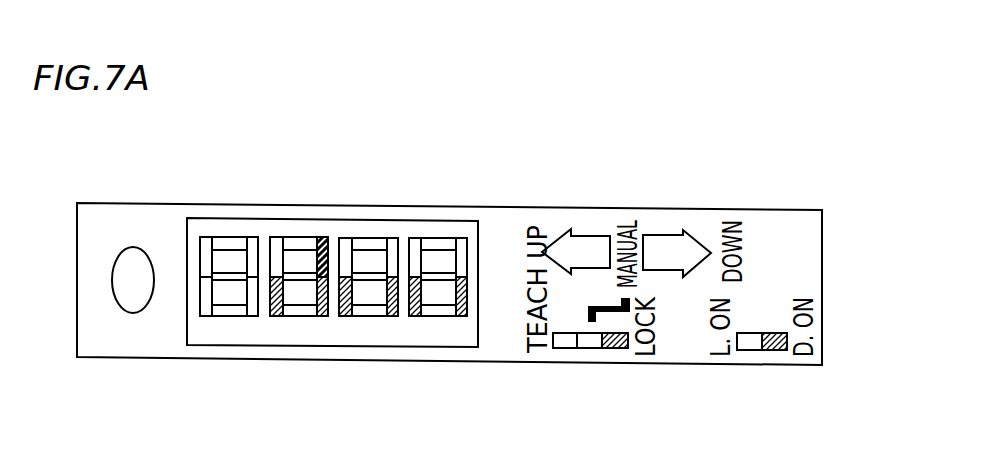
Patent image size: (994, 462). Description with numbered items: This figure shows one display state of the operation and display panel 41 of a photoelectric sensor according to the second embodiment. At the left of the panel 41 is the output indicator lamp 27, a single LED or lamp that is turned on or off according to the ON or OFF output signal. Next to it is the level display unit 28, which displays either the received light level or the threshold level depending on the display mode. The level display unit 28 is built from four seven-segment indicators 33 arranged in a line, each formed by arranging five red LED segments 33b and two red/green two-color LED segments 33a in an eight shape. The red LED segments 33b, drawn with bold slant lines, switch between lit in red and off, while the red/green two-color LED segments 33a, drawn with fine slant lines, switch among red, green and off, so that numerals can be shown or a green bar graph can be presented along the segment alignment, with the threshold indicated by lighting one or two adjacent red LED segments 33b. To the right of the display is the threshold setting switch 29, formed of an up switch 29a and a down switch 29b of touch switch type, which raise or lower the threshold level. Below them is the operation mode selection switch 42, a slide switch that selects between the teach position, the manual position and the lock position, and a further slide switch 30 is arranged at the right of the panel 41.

The operation panel 41 is at (872, 135).
The output indicator lamp 27 is at (133, 265).
The level display unit 28 is at (396, 230).
The threshold setting switch 29 is at (626, 201).
The up switch 29a is at (594, 243).
The down switch 29b is at (672, 221).
The 7-segment indicator 33 is at (438, 240).
The red/green two-color LED segment 33a is at (275, 314).
The red LED segment 33b is at (321, 243).
The operation mode selection switch 42 is at (617, 349).
The L.ON/D.ON slide switch 30 is at (775, 351).